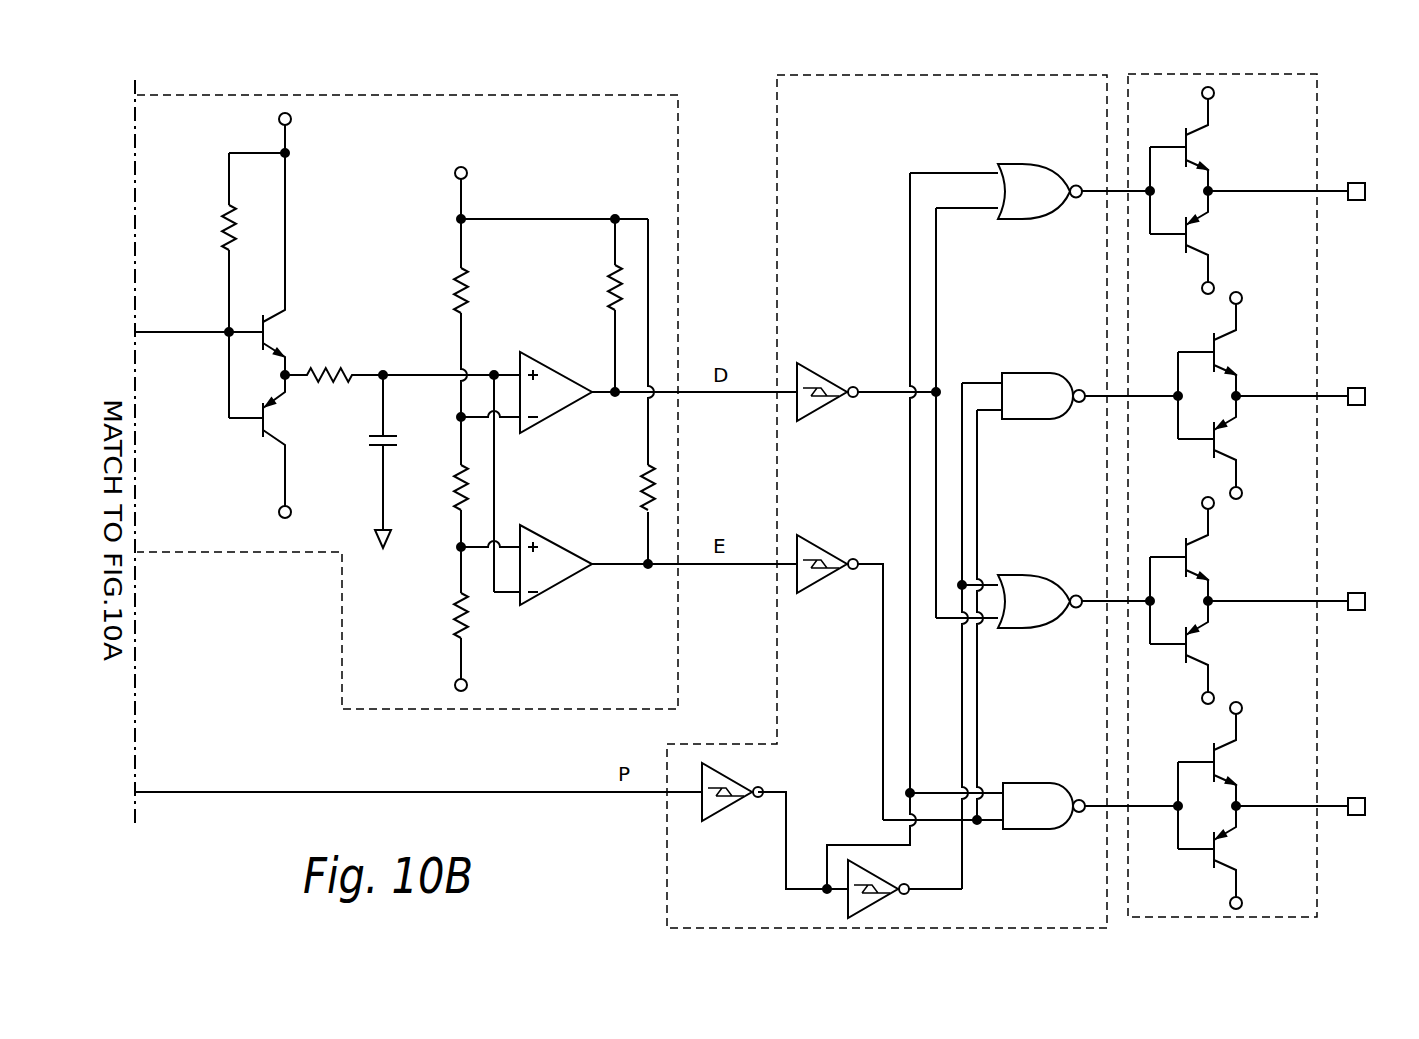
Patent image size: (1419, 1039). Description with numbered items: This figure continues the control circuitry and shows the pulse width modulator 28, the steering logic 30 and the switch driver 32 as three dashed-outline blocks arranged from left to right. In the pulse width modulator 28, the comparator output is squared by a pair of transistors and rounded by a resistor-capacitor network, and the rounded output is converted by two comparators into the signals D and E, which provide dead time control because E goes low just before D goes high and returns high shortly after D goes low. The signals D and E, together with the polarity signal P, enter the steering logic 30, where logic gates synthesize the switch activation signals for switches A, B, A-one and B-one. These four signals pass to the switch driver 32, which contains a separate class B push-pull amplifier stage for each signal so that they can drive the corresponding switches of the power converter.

The pulse width modulator 28 is at (678, 332).
The steering logic 30 is at (777, 192).
The switch driver 32 is at (1317, 145).